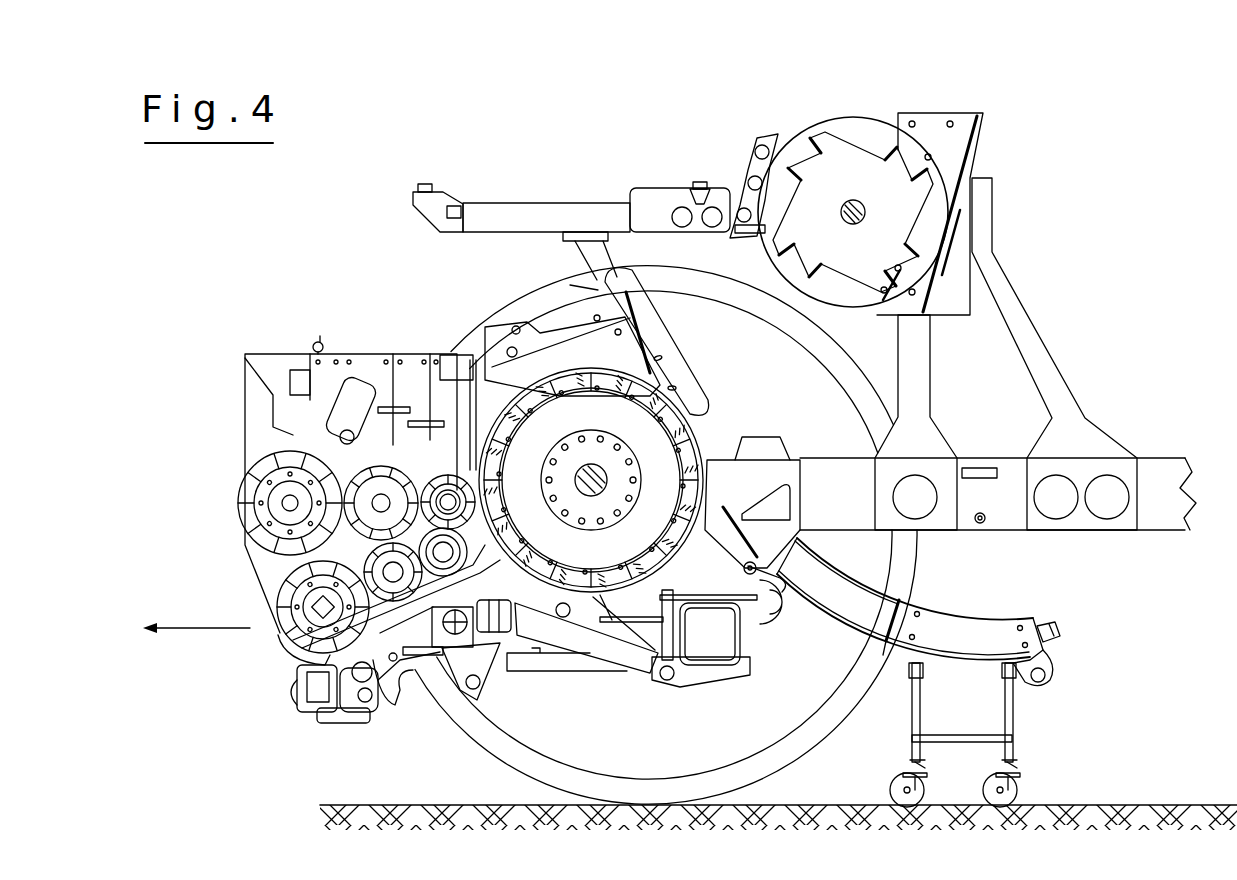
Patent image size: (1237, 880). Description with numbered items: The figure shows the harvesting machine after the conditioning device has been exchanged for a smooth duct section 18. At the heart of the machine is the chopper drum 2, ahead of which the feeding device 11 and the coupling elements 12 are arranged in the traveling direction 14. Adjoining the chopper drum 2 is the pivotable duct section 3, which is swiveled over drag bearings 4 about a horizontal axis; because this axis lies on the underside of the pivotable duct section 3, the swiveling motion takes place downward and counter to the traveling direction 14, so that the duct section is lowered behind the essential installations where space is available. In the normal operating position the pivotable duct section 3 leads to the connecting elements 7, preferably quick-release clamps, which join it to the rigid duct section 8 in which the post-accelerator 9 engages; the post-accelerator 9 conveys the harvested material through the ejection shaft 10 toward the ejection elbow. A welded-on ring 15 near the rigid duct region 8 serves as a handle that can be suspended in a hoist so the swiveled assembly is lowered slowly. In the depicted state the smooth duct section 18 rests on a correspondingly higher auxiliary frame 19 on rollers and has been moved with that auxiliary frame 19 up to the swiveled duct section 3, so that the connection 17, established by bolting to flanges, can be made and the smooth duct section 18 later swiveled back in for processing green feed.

The chopper drum 2 is at (558, 417).
The pivotable duct section 3 is at (853, 597).
The drag bearings 4 is at (800, 602).
The connecting elements 7 is at (1058, 637).
The rigid duct section 8 is at (907, 312).
The post-accelerator 9 is at (842, 168).
The ejection shaft 10 is at (937, 145).
The feeding device 11 is at (341, 316).
The coupling elements 12 is at (280, 725).
The traveling direction 14 is at (200, 628).
The welded-on ring 15 is at (1043, 680).
The connection 17 is at (877, 659).
The smooth duct section 18 is at (965, 637).
The auxiliary frame 19 is at (1013, 714).